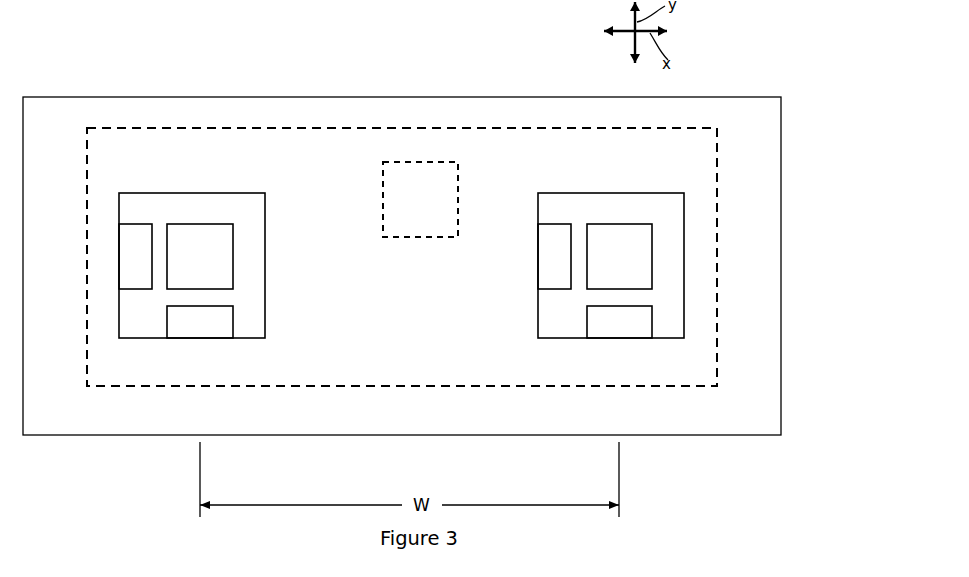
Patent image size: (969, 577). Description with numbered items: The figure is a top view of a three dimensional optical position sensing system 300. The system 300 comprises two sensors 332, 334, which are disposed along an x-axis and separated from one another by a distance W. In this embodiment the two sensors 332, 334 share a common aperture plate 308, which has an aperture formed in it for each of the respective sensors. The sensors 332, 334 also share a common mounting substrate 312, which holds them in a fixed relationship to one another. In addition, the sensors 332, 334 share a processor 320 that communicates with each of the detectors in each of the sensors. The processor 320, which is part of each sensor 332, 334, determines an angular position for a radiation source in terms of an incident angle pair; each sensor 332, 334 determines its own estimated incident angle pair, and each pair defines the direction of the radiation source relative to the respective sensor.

The three dimensional optical position sensing system 300 is at (352, 91).
The common aperture plate 308 is at (248, 113).
The common mounting substrate 312 is at (140, 145).
The processor 320 is at (422, 178).
The sensor 332 is at (136, 329).
The sensor 334 is at (665, 329).